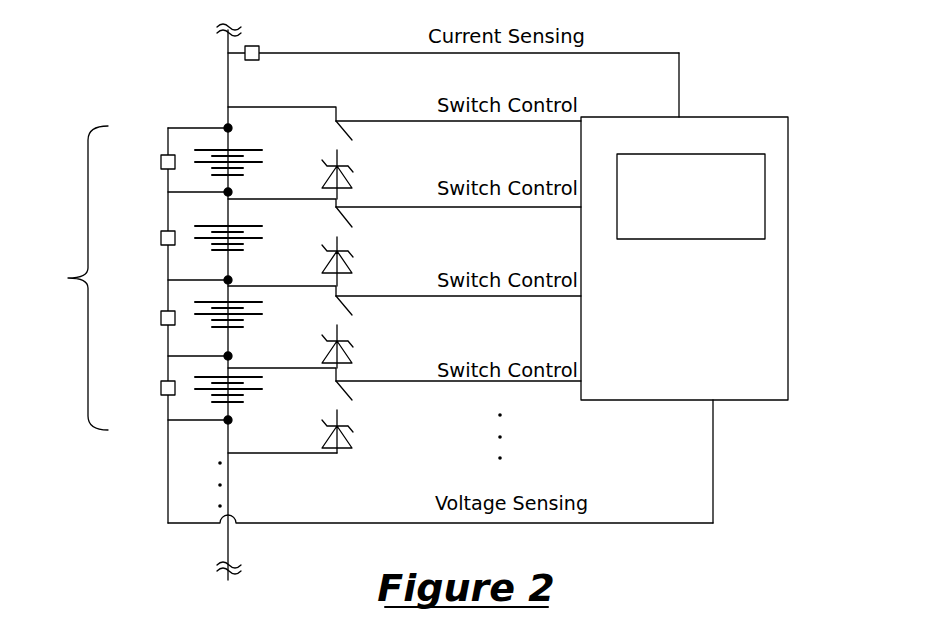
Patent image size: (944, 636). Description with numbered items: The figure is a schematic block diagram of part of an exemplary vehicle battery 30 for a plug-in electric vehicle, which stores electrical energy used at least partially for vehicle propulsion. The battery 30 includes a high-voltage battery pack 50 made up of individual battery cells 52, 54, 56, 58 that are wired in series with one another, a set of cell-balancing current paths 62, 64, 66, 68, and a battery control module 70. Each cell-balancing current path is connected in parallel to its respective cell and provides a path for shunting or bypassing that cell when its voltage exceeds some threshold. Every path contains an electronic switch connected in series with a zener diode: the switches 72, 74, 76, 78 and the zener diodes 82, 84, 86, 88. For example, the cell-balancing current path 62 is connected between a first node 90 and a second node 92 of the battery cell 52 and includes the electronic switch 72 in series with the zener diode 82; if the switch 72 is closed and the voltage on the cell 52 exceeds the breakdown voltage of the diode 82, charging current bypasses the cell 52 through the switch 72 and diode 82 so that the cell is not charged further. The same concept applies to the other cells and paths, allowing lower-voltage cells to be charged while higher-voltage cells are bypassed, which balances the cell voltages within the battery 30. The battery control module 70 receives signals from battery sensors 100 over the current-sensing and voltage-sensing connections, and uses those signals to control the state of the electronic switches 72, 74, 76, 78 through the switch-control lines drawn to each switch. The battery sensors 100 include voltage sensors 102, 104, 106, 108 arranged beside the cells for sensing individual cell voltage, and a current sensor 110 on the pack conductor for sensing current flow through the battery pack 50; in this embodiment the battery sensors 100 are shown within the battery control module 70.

The vehicle battery 30 is at (716, 33).
The battery pack 50 is at (69, 278).
The battery cell 52 is at (200, 148).
The battery cell 54 is at (200, 253).
The battery cell 56 is at (200, 299).
The battery cell 58 is at (202, 403).
The cell-balancing current path 62 is at (340, 108).
The cell-balancing current path 64 is at (362, 250).
The cell-balancing current path 66 is at (362, 337).
The cell-balancing current path 68 is at (362, 422).
The battery control module 70 is at (761, 400).
The electronic switch 72 is at (352, 140).
The electronic switch 74 is at (352, 227).
The electronic switch 76 is at (352, 315).
The electronic switch 78 is at (352, 400).
The zener diode 82 is at (352, 188).
The zener diode 84 is at (352, 273).
The zener diode 86 is at (352, 363).
The zener diode 88 is at (352, 448).
The first node 90 is at (226, 126).
The second node 92 is at (226, 195).
The battery sensors 100 is at (765, 191).
The voltage sensor 102 is at (160, 162).
The voltage sensor 104 is at (160, 238).
The voltage sensor 106 is at (160, 318).
The voltage sensor 108 is at (160, 388).
The current sensor 110 is at (256, 46).